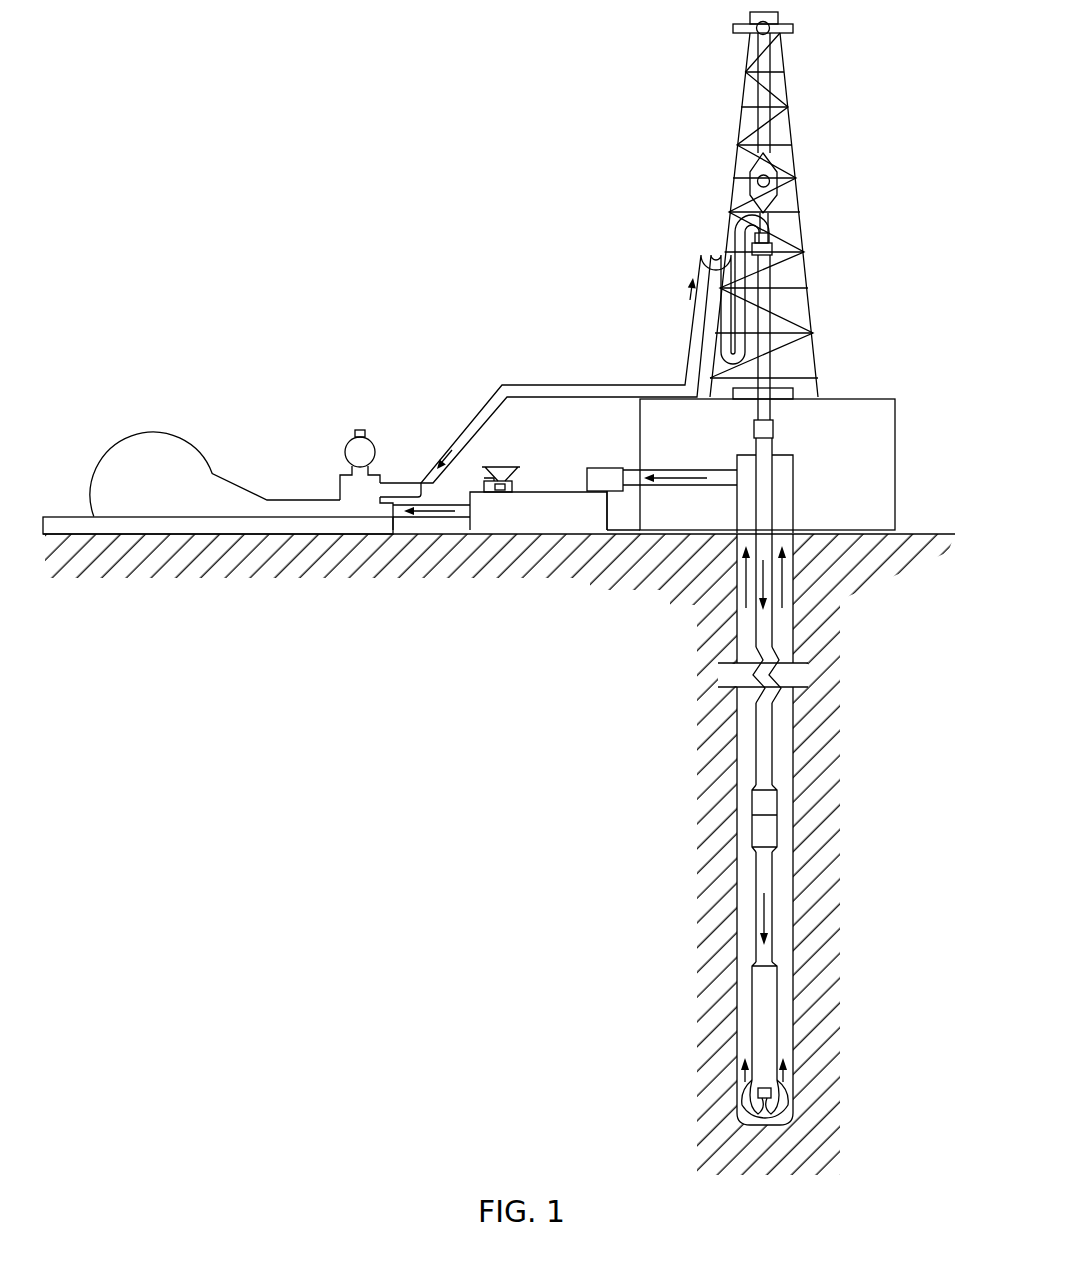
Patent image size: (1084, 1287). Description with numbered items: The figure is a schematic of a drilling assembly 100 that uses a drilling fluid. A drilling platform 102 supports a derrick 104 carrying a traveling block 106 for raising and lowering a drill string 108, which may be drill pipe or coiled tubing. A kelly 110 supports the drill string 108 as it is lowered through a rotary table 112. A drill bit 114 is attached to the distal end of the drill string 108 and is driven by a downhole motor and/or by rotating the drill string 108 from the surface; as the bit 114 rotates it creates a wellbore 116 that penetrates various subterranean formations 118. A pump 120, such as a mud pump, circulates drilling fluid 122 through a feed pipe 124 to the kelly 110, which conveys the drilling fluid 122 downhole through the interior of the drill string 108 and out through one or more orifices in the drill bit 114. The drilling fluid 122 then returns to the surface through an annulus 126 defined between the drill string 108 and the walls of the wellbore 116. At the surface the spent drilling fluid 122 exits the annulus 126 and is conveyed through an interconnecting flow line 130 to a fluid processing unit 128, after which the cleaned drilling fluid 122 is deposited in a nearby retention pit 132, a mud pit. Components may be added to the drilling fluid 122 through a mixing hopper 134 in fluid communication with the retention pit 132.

The drilling assembly 100 is at (466, 100).
The drilling platform 102 is at (895, 408).
The derrick 104 is at (794, 121).
The traveling block 106 is at (778, 165).
The drill string 108 is at (767, 640).
The kelly 110 is at (766, 302).
The rotary table 112 is at (795, 393).
The drill bit 114 is at (785, 1097).
The wellbore 116 is at (794, 742).
The subterranean formations 118 is at (621, 779).
The pump 120 is at (168, 494).
The drilling fluid 122 is at (407, 486).
The feed pipe 124 is at (525, 383).
The annulus 126 is at (780, 910).
The fluid processing unit 128 is at (606, 468).
The interconnecting flow line 130 is at (722, 485).
The retention pit 132 is at (585, 521).
The mixing hopper 134 is at (487, 493).